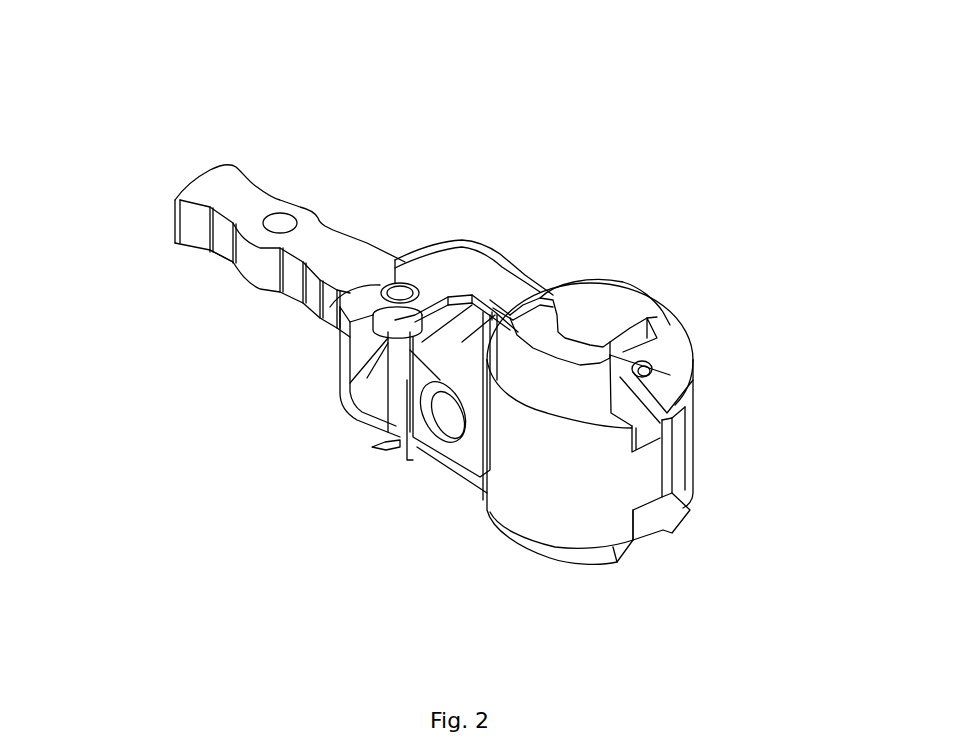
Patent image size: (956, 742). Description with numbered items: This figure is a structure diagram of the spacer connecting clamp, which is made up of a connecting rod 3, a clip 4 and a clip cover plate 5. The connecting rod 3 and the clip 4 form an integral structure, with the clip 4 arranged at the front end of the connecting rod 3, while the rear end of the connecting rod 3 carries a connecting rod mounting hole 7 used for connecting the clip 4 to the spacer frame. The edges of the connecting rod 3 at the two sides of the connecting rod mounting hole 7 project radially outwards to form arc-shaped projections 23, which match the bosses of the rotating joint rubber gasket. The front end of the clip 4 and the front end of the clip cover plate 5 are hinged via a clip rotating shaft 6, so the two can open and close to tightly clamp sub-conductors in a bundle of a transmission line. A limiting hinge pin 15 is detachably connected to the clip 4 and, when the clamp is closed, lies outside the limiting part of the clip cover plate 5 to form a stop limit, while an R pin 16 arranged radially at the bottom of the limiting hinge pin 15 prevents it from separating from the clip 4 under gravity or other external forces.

The connecting rod 3 is at (240, 202).
The clip 4 is at (498, 282).
The clip cover plate 5 is at (543, 490).
The clip rotating shaft 6 is at (647, 367).
The connecting rod mounting hole 7 is at (282, 218).
The limiting hinge pin 15 is at (357, 423).
The R pin 16 is at (390, 443).
The arc-shaped projection 23 is at (308, 215).